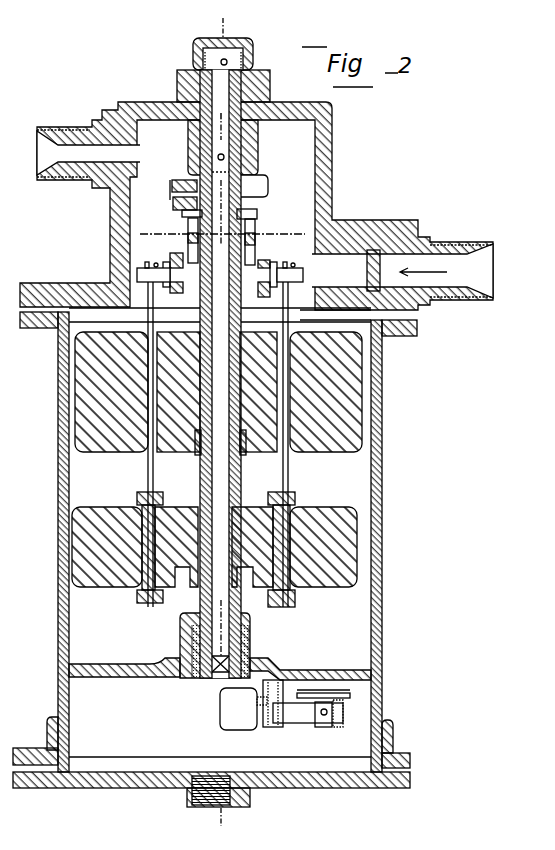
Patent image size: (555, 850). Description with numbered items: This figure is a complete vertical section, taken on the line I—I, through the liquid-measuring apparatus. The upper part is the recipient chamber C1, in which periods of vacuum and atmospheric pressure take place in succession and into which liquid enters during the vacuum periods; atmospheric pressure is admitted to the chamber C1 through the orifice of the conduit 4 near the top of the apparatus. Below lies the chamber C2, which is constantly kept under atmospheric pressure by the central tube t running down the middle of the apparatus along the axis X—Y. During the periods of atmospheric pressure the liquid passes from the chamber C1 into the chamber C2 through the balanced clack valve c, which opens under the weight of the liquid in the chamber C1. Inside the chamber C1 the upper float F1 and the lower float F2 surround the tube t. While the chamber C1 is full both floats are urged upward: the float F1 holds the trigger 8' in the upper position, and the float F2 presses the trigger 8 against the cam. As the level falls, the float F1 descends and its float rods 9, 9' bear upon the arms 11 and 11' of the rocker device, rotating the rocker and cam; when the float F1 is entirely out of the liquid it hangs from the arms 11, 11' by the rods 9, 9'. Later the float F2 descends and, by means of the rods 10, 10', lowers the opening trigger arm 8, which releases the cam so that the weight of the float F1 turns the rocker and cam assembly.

The conduit 4 is at (232, 156).
The central tube t is at (250, 73).
The trigger 8' is at (177, 183).
The float rod 9 is at (177, 216).
The float rod 9' is at (266, 220).
The rocker arm 11' is at (177, 240).
The rocker arm 11 is at (264, 242).
The opening trigger arm 8 is at (167, 281).
The float F1 is at (362, 402).
The rod 10' is at (170, 444).
The rod 10 is at (268, 444).
The recipient chamber C1 is at (218, 542).
The float F2 is at (342, 550).
The chamber C2 is at (211, 732).
The clack valve c is at (350, 698).
The section line I is at (222, 432).
The axis end point Y is at (221, 110).
The axis end point X is at (220, 664).